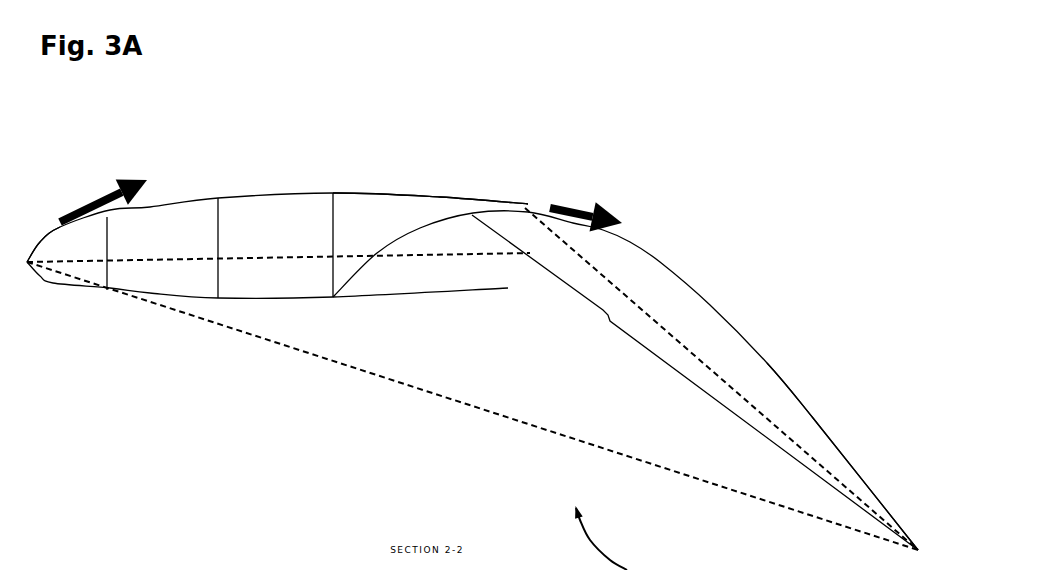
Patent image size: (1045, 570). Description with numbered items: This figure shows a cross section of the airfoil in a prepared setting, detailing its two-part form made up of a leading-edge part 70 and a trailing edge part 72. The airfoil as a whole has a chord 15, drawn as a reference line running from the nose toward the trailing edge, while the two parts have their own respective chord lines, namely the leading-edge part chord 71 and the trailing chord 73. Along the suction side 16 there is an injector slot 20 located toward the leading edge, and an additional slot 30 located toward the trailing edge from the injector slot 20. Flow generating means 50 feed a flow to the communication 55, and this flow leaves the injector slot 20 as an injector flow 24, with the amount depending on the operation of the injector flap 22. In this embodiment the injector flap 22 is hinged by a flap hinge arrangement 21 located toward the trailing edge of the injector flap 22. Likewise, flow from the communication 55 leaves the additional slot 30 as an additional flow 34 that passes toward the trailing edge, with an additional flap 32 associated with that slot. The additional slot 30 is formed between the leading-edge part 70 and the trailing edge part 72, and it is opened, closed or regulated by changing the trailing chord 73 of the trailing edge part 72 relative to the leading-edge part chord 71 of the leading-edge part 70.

The chord 15 is at (492, 413).
The suction side 16 is at (170, 205).
The injector slot 20 is at (37, 231).
The flap hinge arrangement 21 is at (97, 217).
The injector flap 22 is at (68, 237).
The injector flow 24 is at (93, 193).
The additional slot 30 is at (535, 202).
The additional flap 32 is at (630, 240).
The additional flow 34 is at (572, 214).
The flow generating means 50 is at (232, 333).
The communication 55 is at (290, 288).
The airfoil leading-edge part 70 is at (413, 178).
The airfoil leading-edge part chord 71 is at (283, 250).
The trailing edge part 72 is at (788, 358).
The trailing chord 73 is at (708, 360).